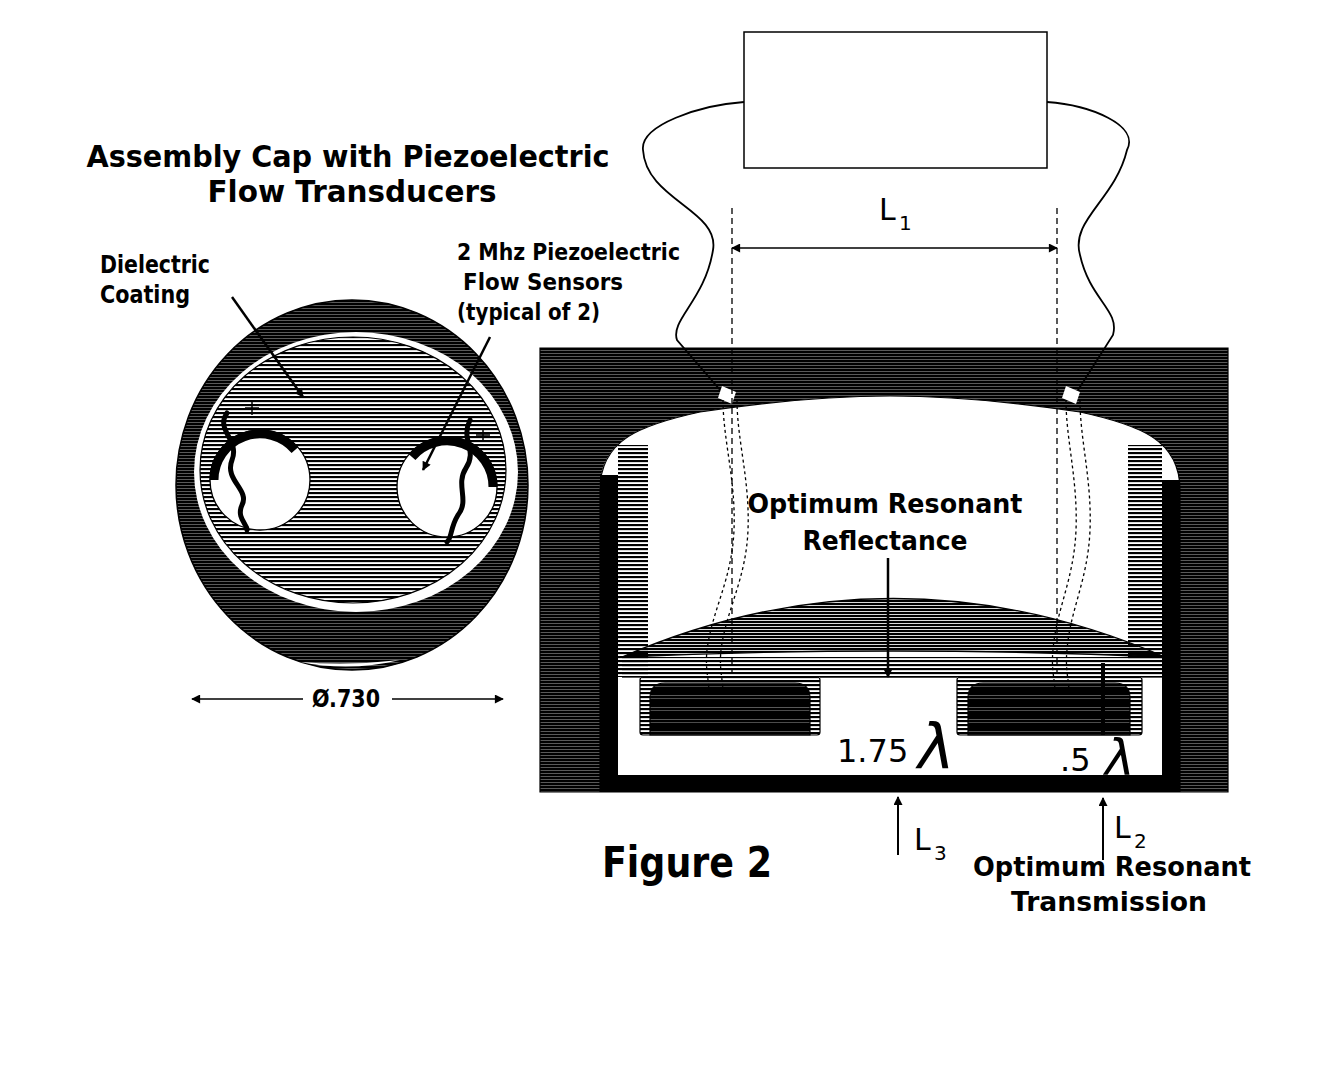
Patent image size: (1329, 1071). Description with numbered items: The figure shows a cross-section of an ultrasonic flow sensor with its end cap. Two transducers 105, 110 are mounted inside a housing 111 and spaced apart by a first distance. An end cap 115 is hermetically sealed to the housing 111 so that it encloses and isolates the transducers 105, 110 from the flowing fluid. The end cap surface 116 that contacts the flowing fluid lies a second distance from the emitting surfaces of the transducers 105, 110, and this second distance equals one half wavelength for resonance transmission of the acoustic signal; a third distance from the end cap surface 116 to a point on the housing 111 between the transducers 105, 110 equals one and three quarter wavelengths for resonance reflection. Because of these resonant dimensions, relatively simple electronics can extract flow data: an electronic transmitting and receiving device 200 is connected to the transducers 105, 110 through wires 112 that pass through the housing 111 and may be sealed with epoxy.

The electronic transmitting and receiving device 200 is at (895, 100).
The wires 112 is at (1077, 465).
The housing 111 is at (1127, 533).
The end cap 115 is at (1184, 609).
The transducer 110 is at (1127, 691).
The transducer 105 is at (657, 722).
The end cap surface 116 is at (637, 790).